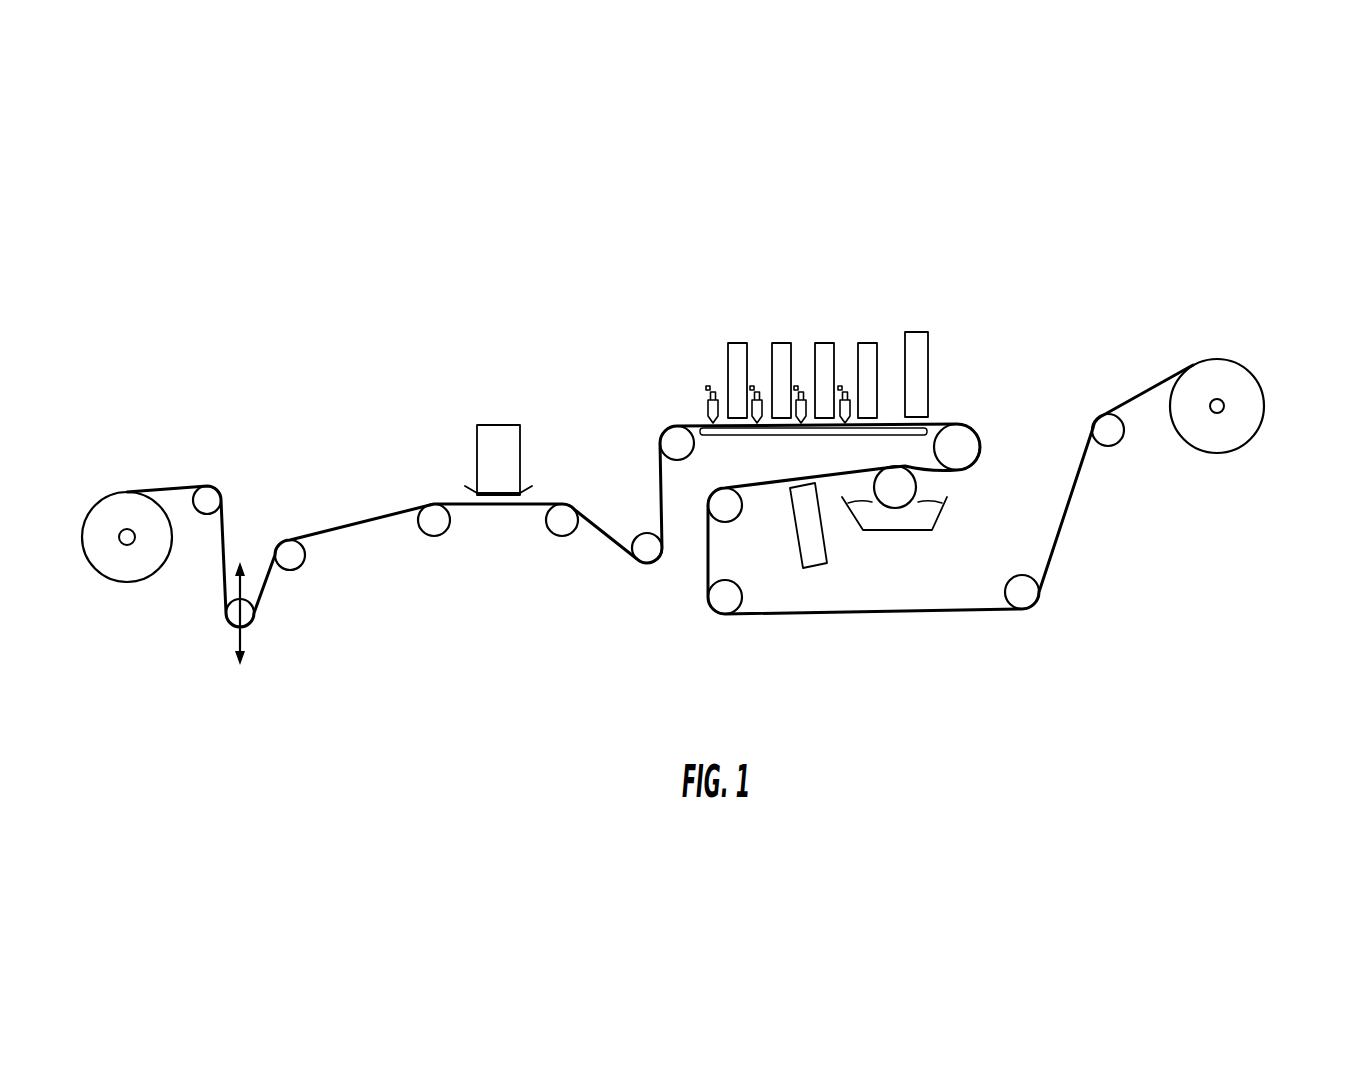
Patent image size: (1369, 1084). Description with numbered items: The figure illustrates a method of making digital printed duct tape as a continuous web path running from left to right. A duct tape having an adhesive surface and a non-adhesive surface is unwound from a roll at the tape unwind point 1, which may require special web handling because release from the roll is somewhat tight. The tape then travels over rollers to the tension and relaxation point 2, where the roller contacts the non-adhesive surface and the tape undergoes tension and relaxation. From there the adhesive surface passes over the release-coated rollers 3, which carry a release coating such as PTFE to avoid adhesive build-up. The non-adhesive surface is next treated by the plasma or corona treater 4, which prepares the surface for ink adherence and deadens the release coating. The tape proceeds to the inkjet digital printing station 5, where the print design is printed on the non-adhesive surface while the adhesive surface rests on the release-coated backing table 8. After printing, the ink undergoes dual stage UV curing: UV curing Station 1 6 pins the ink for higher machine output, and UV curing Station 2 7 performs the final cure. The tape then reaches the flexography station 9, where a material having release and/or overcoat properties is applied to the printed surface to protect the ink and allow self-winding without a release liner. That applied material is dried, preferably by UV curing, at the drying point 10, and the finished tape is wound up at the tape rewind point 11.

The tape unwind point 1 is at (127, 490).
The tension and relaxation point 2 is at (223, 613).
The release-coated rollers 3 is at (498, 433).
The plasma or corona treater 4 is at (552, 533).
The inkjet digital printing station 5 is at (841, 386).
The UV curing Station 1 6 is at (867, 343).
The UV curing Station 2 7 is at (916, 332).
The backing table 8 is at (927, 425).
The flexography station 9 is at (868, 512).
The drying point 10 is at (813, 567).
The tape rewind point 11 is at (1233, 432).